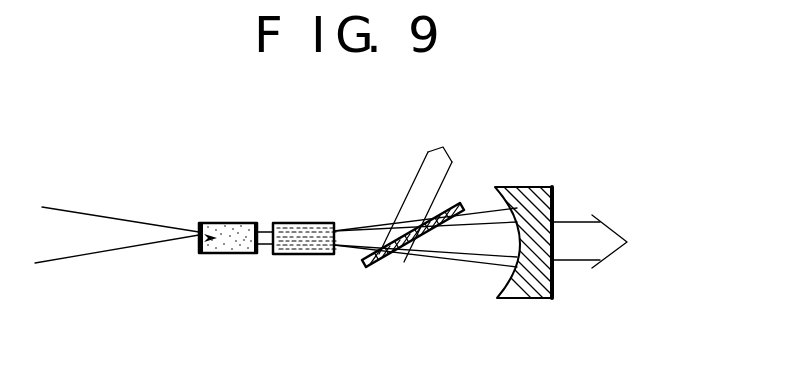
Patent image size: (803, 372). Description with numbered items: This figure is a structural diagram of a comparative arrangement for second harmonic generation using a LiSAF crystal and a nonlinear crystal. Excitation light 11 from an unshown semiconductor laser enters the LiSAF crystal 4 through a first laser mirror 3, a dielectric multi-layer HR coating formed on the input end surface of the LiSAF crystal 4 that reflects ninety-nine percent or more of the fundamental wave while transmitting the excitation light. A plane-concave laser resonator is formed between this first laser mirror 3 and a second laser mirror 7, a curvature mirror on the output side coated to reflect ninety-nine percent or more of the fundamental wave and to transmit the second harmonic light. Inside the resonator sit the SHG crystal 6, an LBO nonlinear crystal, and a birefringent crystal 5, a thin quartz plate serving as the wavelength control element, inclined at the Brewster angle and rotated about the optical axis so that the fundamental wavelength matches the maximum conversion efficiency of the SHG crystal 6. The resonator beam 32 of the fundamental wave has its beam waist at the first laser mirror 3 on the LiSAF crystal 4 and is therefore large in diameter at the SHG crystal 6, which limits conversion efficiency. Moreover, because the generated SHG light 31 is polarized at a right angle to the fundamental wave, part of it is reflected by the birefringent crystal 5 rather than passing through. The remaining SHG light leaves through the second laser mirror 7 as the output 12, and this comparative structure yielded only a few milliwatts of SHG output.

The first laser mirror 3 is at (200, 257).
The LiSAF crystal 4 is at (229, 228).
The birefringent crystal 5 is at (373, 265).
The SHG crystal 6 is at (304, 222).
The second laser mirror 7 is at (533, 200).
The excitation light 11 is at (108, 227).
The output light beam 12 is at (589, 259).
The SHG light 31 is at (422, 185).
The resonator beam 32 is at (497, 265).